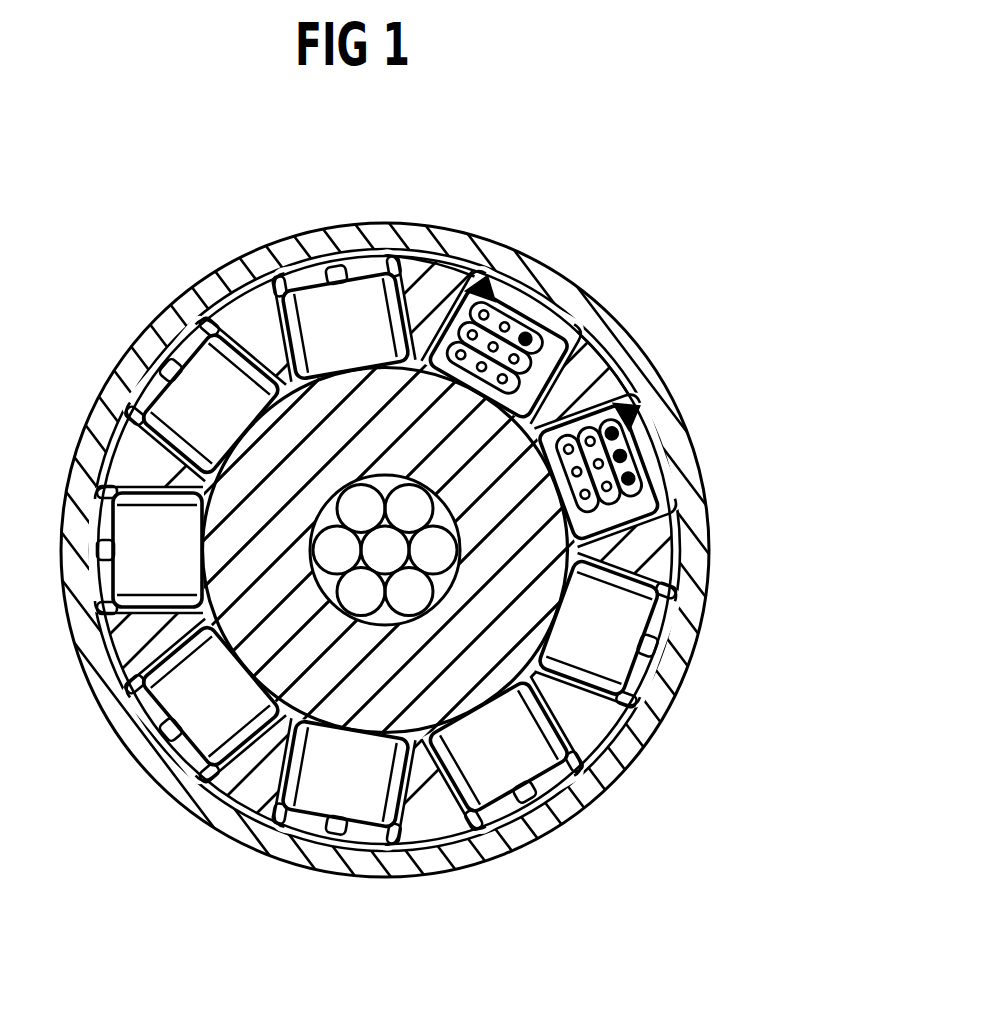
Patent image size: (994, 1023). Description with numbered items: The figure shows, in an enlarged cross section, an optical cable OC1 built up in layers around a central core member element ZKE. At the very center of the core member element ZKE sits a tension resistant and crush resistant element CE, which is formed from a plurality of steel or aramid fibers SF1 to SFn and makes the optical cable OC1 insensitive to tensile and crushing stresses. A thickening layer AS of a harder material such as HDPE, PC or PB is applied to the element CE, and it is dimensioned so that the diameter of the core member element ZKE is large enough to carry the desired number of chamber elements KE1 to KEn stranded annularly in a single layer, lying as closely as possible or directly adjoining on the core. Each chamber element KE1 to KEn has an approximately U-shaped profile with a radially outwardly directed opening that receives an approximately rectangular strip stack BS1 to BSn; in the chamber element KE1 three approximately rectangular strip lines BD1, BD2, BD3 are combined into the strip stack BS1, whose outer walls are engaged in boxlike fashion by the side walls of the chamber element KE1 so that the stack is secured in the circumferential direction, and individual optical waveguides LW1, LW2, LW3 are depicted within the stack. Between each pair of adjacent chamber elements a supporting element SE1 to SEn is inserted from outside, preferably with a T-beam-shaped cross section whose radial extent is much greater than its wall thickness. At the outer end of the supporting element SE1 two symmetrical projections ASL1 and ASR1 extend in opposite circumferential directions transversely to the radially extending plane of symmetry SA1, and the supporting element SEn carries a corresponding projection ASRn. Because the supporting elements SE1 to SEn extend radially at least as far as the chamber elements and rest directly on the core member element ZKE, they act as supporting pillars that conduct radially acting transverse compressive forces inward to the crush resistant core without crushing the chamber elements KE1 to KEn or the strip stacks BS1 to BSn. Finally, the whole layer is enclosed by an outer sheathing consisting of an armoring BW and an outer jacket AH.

The optical cable OC1 is at (602, 806).
The outer jacket AH is at (273, 843).
The armoring BW is at (200, 797).
The plane of symmetry SA1 is at (522, 430).
The strip line BD1 is at (543, 475).
The strip line BD2 is at (578, 527).
The strip line BD3 is at (660, 490).
The tension resistant and crush resistant element CE is at (315, 592).
The steel or aramid fiber SFn is at (350, 610).
The steel or aramid fiber SF1 is at (408, 612).
The supporting element SEn is at (405, 276).
The supporting element SE1 is at (615, 372).
The core member element ZKE is at (227, 673).
The thickening layer AS is at (523, 623).
The symmetrical projection ASL1 is at (557, 327).
The symmetrical projection ASRn is at (511, 280).
The symmetrical projection ASR1 is at (730, 464).
The strip stack BSn is at (537, 307).
The strip stack BS1 is at (643, 481).
The chamber element KEn is at (497, 293).
The chamber element KE1 is at (625, 416).
The optical waveguide 1 LW1 is at (633, 428).
The optical waveguide 2 LW2 is at (640, 447).
The optical waveguide 3 LW3 is at (657, 488).